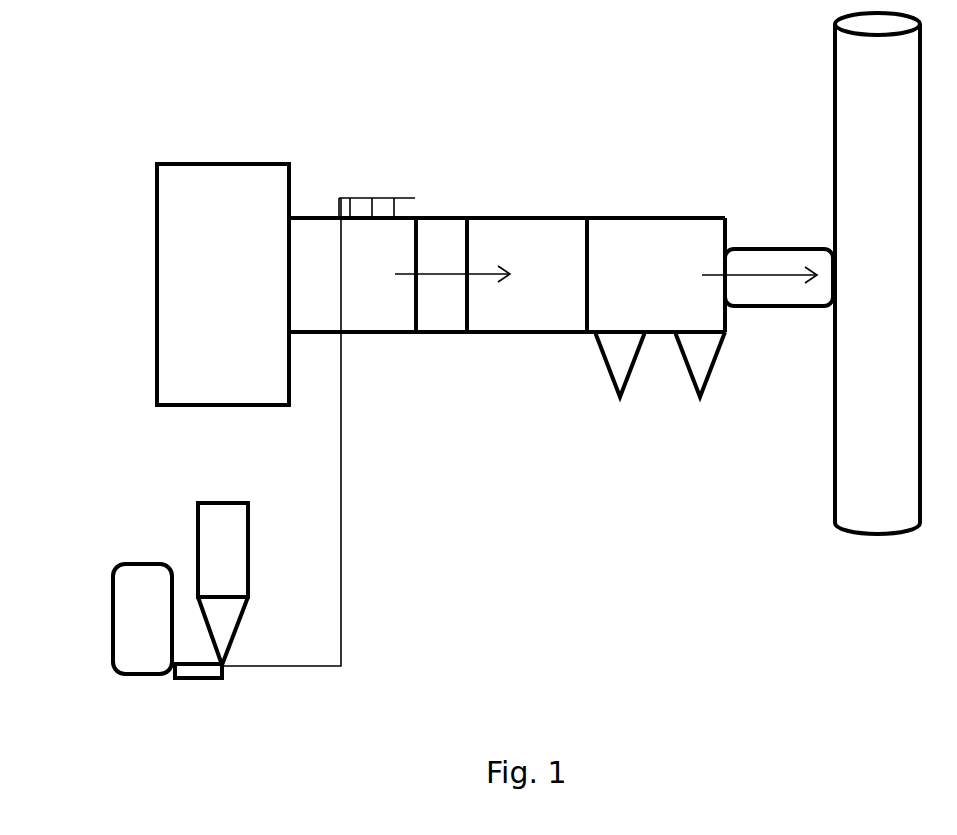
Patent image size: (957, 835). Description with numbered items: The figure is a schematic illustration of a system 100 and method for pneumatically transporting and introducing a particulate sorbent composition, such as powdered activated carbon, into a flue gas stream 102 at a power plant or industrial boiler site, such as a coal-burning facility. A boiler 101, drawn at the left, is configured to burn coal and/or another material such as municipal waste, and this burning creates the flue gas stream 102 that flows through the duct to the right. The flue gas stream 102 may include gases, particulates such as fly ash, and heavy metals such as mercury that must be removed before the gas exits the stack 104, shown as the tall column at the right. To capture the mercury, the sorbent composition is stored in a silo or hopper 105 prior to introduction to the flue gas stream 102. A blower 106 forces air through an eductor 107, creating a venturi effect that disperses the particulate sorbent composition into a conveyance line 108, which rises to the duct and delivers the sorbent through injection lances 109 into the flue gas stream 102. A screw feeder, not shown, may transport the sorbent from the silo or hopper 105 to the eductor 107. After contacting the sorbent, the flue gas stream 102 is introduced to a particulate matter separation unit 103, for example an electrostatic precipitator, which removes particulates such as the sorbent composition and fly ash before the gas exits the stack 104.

The system 100 is at (143, 145).
The boiler 101 is at (247, 262).
The flue gas stream 102 is at (425, 274).
The particulate matter separation unit 103 is at (677, 290).
The stack 104 is at (905, 183).
The silo or hopper 105 is at (243, 525).
The blower 106 is at (113, 622).
The eductor 107 is at (198, 678).
The conveyance line 108 is at (341, 623).
The injection lances 109 is at (395, 191).